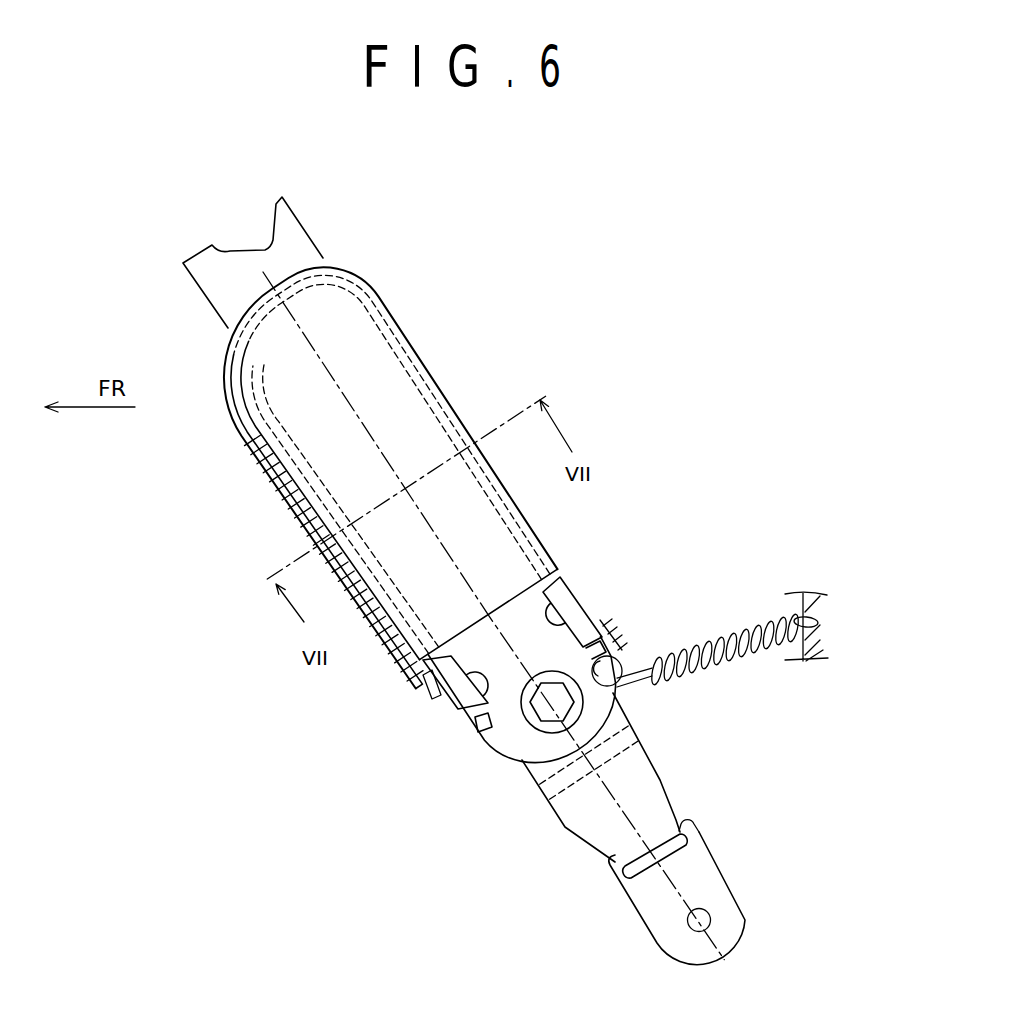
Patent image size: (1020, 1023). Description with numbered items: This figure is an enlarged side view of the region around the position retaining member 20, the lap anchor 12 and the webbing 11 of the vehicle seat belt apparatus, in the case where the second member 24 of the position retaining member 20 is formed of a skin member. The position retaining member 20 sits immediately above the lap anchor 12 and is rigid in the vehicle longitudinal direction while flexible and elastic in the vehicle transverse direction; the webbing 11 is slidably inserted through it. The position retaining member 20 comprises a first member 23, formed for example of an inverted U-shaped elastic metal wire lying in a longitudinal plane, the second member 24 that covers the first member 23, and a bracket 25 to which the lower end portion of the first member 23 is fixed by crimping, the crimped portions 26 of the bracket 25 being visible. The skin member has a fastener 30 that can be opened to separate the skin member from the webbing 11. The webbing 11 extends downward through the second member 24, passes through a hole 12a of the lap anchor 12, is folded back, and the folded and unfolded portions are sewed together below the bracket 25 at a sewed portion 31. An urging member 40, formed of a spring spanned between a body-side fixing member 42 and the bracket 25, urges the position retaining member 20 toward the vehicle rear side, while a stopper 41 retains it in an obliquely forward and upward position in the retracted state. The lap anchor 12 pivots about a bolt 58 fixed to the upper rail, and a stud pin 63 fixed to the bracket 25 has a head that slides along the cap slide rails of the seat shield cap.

The webbing 11 is at (288, 247).
The position retaining member 20 is at (412, 324).
The first member 23 is at (400, 365).
The second member 24 is at (295, 409).
The fastener 30 is at (302, 507).
The crimped portions 26 is at (560, 620).
The bracket 25 is at (530, 738).
The stud pin 63 is at (525, 738).
The sewed portion 31 is at (572, 795).
The stopper 41 is at (613, 642).
The urging member 40 is at (746, 628).
The body-side fixing member 42 is at (792, 663).
The lap anchor 12 is at (733, 883).
The hole 12a is at (693, 825).
The bolt 58 is at (711, 918).